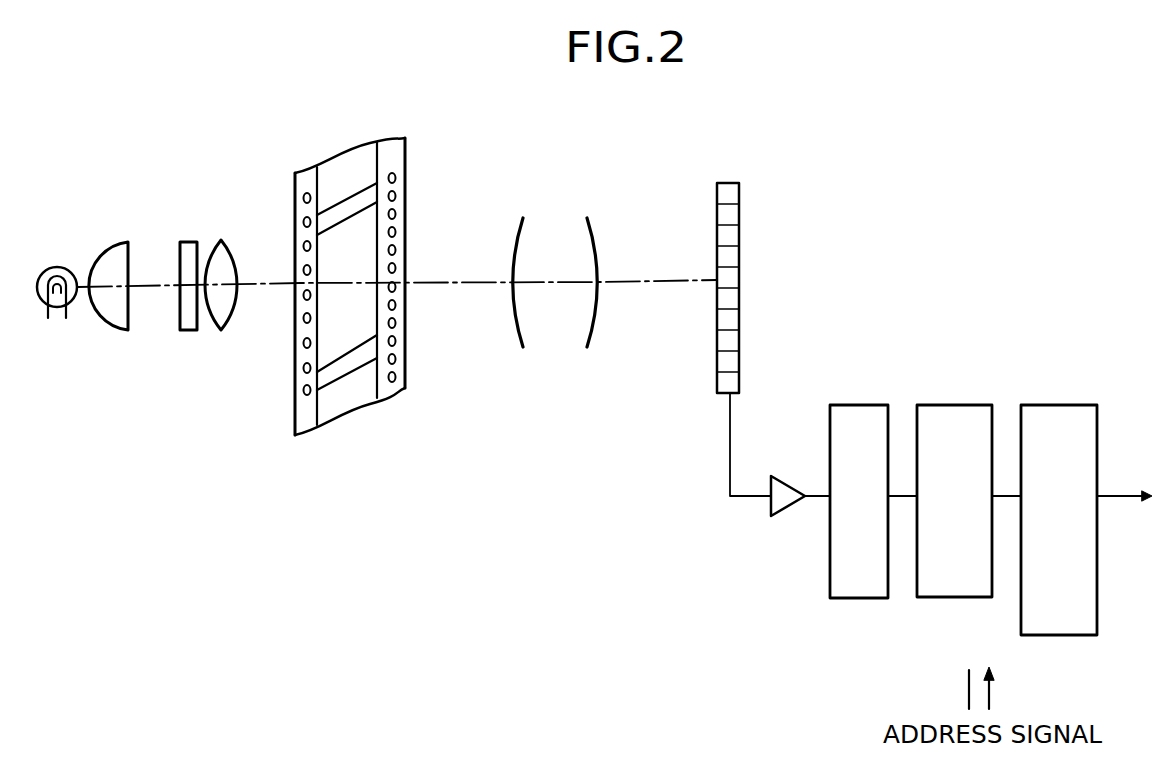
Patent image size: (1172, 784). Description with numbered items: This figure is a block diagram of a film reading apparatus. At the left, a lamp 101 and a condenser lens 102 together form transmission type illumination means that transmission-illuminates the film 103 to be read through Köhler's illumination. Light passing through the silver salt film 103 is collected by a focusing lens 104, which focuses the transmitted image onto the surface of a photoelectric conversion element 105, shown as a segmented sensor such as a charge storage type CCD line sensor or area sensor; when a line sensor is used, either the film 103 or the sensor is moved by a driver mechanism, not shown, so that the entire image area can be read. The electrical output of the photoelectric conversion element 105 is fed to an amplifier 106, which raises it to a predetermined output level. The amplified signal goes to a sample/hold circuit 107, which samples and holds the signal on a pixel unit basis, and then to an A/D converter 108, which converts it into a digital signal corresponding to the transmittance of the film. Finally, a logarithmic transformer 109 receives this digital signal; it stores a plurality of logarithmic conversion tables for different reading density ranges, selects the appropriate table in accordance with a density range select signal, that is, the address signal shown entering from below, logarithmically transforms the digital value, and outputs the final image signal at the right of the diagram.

The lamp 101 is at (75, 303).
The condenser lens 102 is at (147, 332).
The film 103 is at (313, 436).
The focusing lens 104 is at (562, 228).
The photoelectric conversion element 105 is at (741, 210).
The amplifier 106 is at (780, 517).
The sample/hold circuit 107 is at (865, 403).
The A/D converter 108 is at (953, 403).
The logarithmic transformer 109 is at (1058, 403).